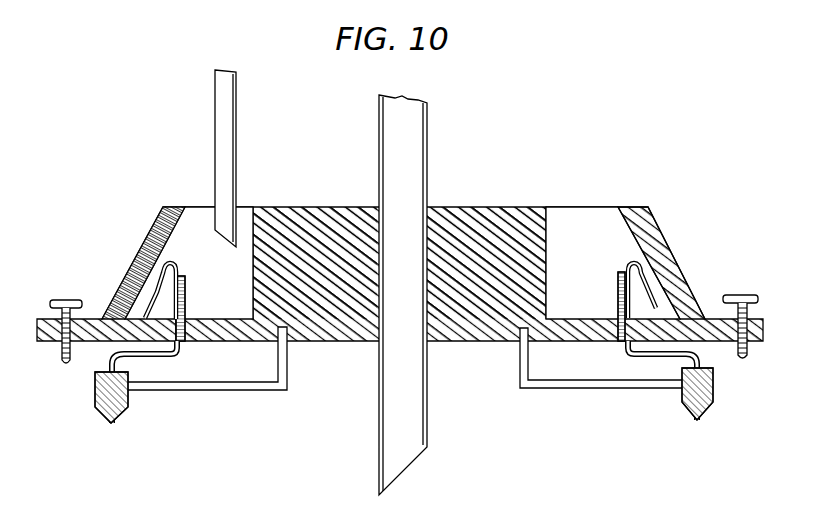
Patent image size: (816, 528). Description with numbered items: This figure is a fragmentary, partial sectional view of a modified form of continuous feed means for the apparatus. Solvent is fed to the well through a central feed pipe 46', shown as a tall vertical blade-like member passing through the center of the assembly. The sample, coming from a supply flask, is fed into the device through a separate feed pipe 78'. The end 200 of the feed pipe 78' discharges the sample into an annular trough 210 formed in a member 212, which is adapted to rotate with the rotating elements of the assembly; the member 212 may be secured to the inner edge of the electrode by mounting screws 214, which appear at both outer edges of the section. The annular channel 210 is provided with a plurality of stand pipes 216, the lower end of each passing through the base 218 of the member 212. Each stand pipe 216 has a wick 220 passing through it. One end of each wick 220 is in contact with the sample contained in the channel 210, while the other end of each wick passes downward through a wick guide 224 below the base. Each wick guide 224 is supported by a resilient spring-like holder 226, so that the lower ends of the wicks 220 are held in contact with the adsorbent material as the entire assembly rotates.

The feed pipe 78' is at (203, 158).
The central feed pipe 46' is at (380, 295).
The end of pipe 200 is at (207, 238).
The member 212 is at (313, 220).
The wick 220 is at (150, 300).
The mounting screws 214 is at (65, 298).
The stand pipes 216 is at (186, 311).
The base 218 is at (203, 341).
The annular trough 210 is at (228, 300).
The wick guide 224 is at (96, 400).
The resilient spring-like holder 226 is at (192, 385).